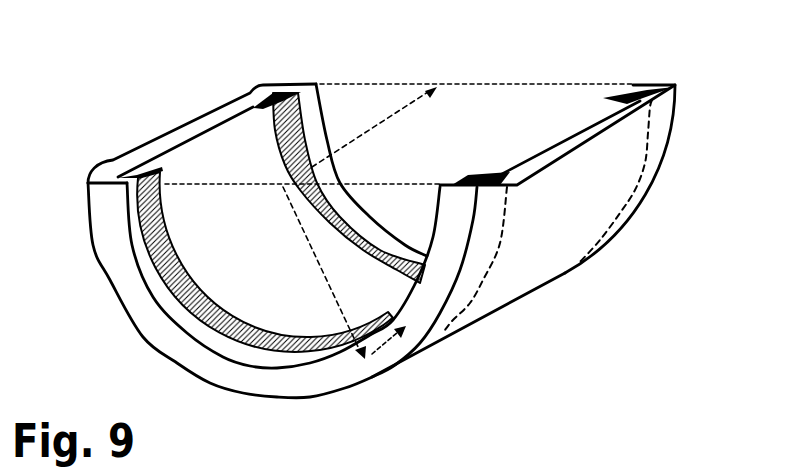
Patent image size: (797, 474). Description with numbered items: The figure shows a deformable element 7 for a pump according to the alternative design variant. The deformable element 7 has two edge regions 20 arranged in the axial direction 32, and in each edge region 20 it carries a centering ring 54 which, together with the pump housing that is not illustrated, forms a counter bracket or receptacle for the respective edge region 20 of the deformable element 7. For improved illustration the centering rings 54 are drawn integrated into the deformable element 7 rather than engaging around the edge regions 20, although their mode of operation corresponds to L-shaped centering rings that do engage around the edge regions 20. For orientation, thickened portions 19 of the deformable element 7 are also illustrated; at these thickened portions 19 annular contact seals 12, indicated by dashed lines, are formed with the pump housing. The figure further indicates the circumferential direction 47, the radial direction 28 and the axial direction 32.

The deformable element 7 is at (151, 95).
The contact seal 12 is at (468, 292).
The thickened portion 19 is at (262, 87).
The edge region 20 is at (126, 315).
The radial direction 28 is at (310, 243).
The axial direction 32 is at (383, 122).
The circumferential direction 47 is at (383, 350).
The centering ring 54 is at (137, 213).